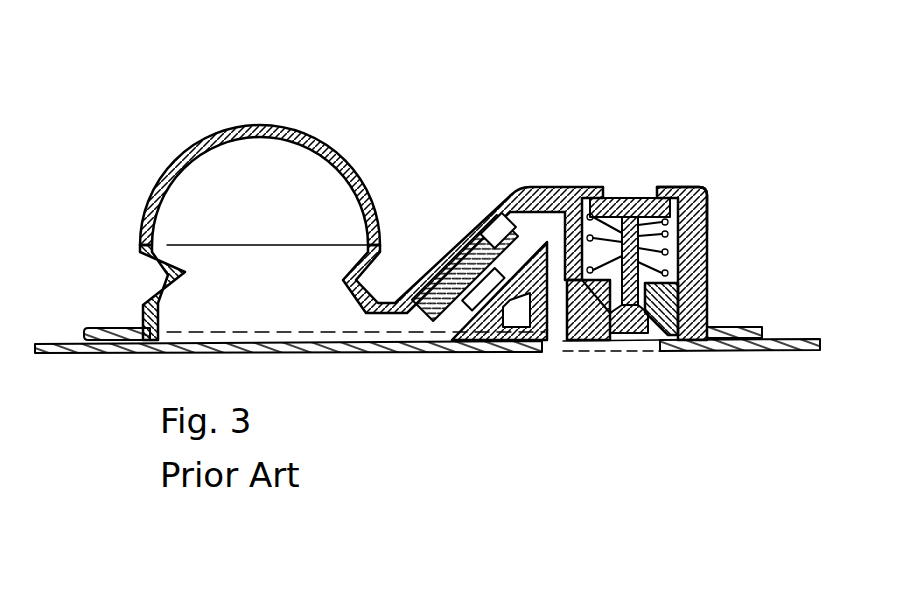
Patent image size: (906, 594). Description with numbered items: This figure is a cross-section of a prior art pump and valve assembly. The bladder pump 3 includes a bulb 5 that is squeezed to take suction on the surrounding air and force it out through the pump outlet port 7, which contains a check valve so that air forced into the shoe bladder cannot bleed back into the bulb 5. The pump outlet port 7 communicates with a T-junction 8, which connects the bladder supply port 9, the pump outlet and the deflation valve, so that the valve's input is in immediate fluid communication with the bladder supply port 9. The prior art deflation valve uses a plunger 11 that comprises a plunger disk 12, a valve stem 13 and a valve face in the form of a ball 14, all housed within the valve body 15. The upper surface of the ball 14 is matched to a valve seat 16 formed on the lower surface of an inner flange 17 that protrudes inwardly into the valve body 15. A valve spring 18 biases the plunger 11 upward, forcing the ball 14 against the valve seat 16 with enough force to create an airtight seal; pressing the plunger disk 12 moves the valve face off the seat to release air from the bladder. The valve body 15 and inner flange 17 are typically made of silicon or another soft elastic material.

The bladder pump 3 is at (216, 106).
The bulb 5 is at (320, 140).
The pump outlet port 7 is at (473, 217).
The T-junction 8 is at (577, 367).
The bladder supply port 9 is at (555, 343).
The plunger 11 is at (615, 189).
The plunger disk 12 is at (625, 197).
The valve stem 13 is at (637, 267).
The ball 14 is at (635, 328).
The valve body 15 is at (707, 218).
The valve seat 16 is at (596, 327).
The inner flange 17 is at (665, 300).
The valve spring 18 is at (706, 200).